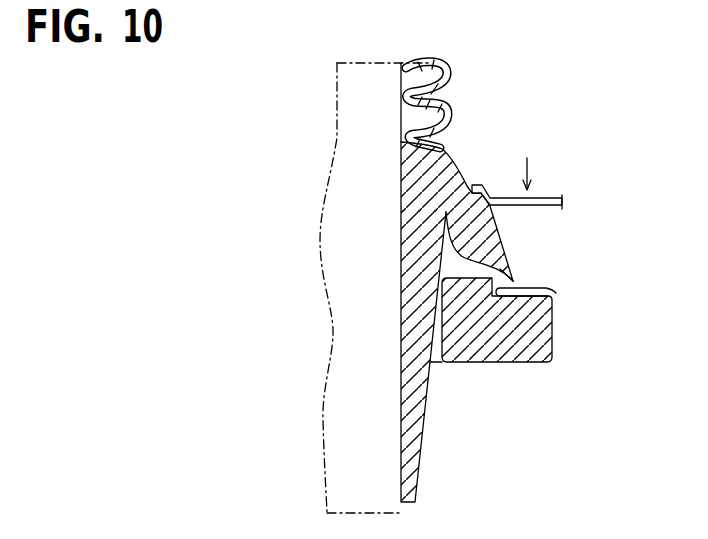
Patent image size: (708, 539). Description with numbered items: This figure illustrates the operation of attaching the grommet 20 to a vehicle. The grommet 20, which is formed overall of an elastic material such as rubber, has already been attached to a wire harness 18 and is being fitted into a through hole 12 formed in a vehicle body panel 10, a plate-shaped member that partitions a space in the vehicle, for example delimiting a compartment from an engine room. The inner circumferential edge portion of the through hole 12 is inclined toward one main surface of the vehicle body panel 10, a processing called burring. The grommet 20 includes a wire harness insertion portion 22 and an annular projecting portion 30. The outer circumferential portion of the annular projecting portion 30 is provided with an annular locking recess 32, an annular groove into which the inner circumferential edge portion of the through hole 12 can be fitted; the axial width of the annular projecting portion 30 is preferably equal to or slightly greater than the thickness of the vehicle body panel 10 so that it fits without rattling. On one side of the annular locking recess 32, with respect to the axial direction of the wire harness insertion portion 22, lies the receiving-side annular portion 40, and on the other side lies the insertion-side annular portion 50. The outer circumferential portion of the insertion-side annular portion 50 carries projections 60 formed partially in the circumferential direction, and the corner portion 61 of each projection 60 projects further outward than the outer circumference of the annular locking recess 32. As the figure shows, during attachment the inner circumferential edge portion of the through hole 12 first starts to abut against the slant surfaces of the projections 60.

The vehicle body panel 10 is at (560, 196).
The through hole 12 is at (481, 186).
The wire harness 18 is at (346, 138).
The grommet 20 is at (597, 330).
The wire harness insertion portion 22 is at (422, 437).
The annular projecting portion 30 is at (555, 352).
The annular locking recess 32 is at (550, 290).
The receiving-side annular portion 40 is at (532, 353).
The insertion-side annular portion 50 is at (453, 153).
The projection 60 is at (492, 227).
The corner portion 61 is at (515, 282).